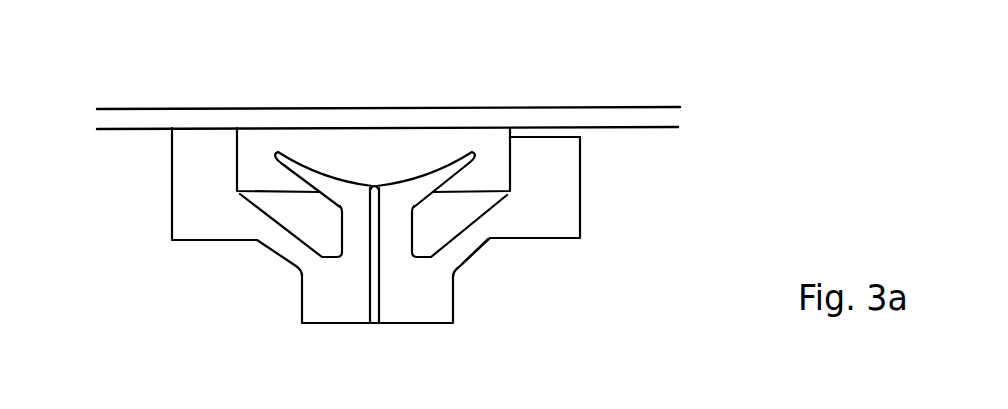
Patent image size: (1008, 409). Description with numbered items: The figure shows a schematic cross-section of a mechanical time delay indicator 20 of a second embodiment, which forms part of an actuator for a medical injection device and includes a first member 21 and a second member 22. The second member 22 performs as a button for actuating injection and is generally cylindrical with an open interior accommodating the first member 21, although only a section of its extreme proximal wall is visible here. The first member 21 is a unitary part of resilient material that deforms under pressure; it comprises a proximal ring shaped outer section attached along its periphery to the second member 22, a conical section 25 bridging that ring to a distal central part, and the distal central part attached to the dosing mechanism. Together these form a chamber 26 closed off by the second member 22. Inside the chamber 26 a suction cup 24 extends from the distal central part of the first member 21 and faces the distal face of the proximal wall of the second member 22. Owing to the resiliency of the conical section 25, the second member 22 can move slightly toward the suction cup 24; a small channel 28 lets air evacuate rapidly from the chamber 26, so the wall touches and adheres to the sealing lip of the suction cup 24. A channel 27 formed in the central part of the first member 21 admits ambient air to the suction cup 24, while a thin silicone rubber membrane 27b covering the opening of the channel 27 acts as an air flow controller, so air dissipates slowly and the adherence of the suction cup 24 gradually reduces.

The time delay indicator 20 is at (755, 157).
The first member 21 is at (330, 323).
The second member 22 is at (485, 118).
The suction cup 24 is at (297, 170).
The conical section 25 is at (482, 245).
The chamber 26 is at (318, 143).
The channel 27 is at (377, 305).
The thin membrane 27b is at (375, 187).
The small channel 28 is at (560, 138).